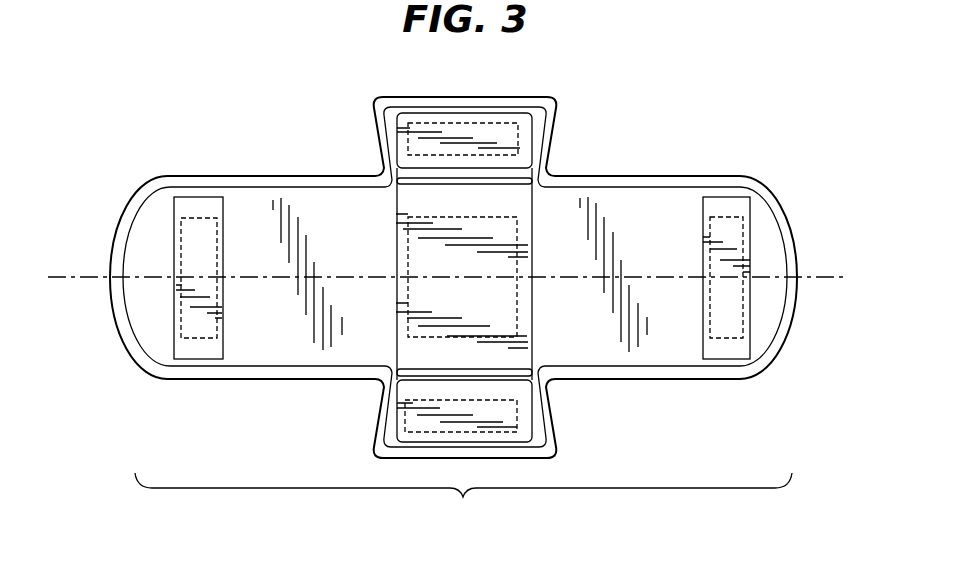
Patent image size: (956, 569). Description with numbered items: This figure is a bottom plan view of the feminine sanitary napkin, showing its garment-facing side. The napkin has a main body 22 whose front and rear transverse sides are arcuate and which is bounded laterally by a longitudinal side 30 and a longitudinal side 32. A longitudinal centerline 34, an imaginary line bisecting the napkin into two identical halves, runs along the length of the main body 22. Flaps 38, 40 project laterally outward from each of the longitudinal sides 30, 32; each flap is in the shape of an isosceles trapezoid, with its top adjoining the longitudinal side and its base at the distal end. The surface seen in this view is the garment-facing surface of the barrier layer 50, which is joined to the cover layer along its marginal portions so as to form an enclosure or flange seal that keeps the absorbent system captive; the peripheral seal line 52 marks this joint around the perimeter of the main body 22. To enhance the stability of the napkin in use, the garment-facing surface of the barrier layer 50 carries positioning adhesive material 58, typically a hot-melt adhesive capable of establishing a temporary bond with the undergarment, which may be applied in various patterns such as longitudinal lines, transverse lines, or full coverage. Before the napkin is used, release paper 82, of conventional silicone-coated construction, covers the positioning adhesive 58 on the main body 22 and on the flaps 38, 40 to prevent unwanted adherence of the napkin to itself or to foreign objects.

The main body 22 is at (463, 501).
The longitudinal side 30 is at (652, 383).
The longitudinal side 32 is at (625, 175).
The longitudinal centerline 34 is at (58, 277).
The flap 38 is at (560, 447).
The flap 40 is at (560, 100).
The barrier layer 50 is at (313, 215).
The peripheral seal line 52 is at (703, 183).
The positioning adhesive material 58 is at (417, 303).
The release paper 82 is at (186, 253).